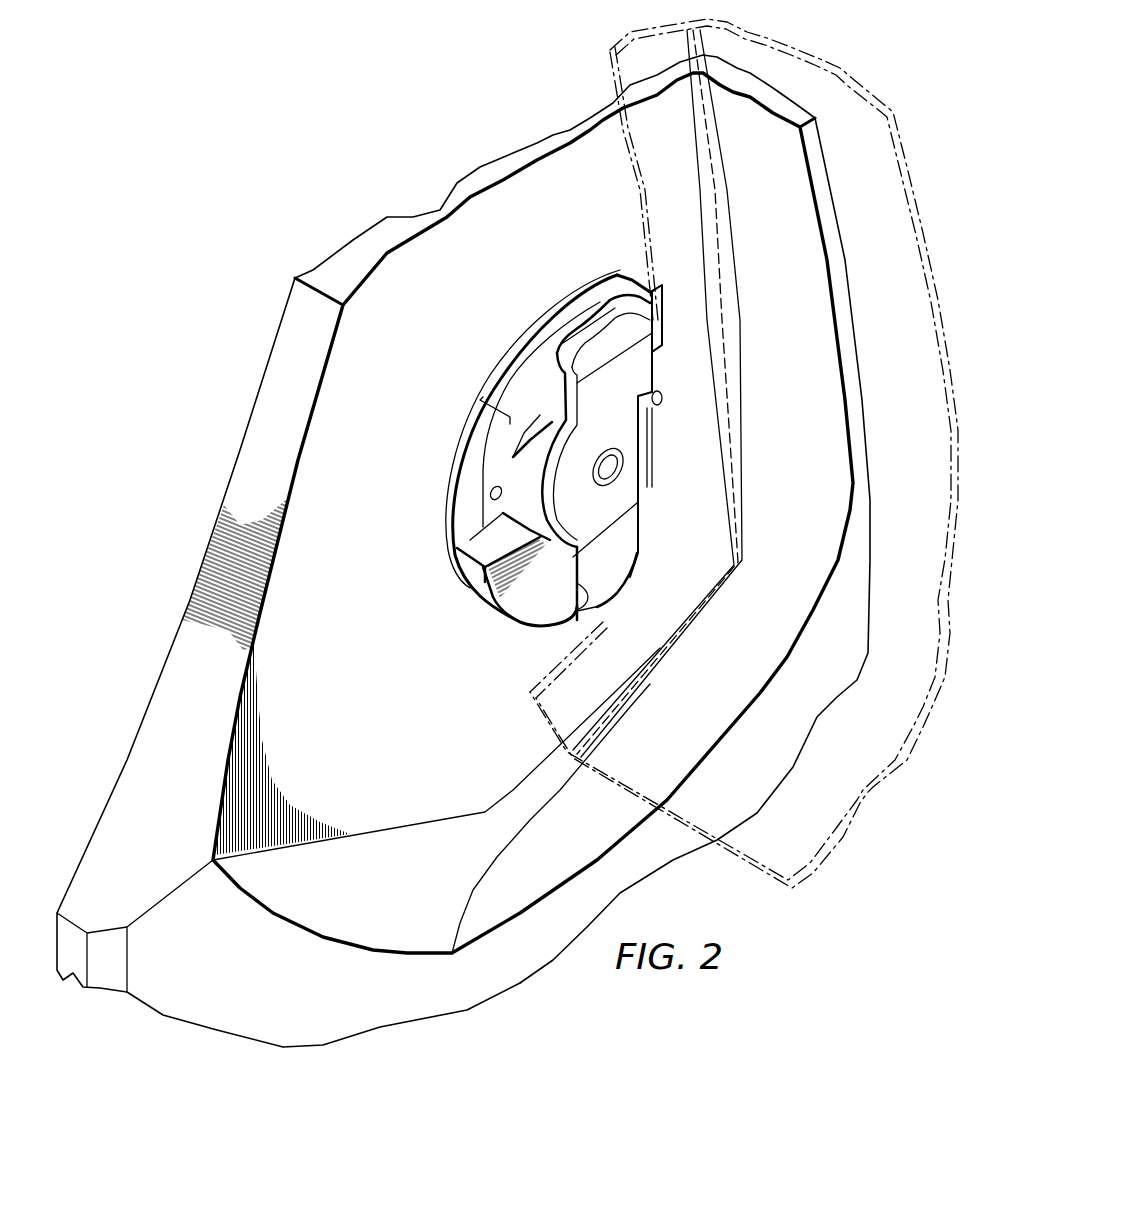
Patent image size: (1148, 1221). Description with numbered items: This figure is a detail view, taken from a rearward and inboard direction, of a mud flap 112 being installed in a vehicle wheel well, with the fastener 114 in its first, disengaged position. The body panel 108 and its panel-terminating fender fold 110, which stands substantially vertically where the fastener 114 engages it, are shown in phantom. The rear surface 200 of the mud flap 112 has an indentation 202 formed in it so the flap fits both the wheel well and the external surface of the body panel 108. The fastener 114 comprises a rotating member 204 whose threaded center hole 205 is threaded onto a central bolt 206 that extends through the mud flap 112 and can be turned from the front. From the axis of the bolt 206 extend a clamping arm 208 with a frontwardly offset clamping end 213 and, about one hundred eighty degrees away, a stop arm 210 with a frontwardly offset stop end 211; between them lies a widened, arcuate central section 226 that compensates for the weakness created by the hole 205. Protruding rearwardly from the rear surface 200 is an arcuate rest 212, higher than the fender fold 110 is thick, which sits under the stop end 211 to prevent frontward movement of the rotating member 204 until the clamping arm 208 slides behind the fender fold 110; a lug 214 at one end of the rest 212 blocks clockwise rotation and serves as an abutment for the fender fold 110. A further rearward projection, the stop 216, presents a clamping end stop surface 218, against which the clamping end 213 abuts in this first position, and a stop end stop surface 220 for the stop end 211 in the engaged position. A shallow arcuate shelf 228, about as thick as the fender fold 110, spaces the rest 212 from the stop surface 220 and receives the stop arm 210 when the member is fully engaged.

The body panel 108 is at (815, 70).
The fender fold 110 is at (640, 200).
The mud flap 112 is at (390, 1012).
The fastener 114 is at (538, 450).
The rear surface 200 is at (358, 688).
The indentation 202 is at (343, 904).
The rotating member 204 is at (662, 376).
The threaded center hole 205 is at (618, 452).
The bolt 206 is at (617, 468).
The clamping arm 208 is at (612, 573).
The stop arm 210 is at (632, 315).
The stop end 211 is at (598, 318).
The rest 212 is at (517, 350).
The clamping end 213 is at (600, 607).
The lug 214 is at (662, 333).
The stop 216 is at (523, 598).
The clamping end stop surface 218 is at (577, 607).
The stop end stop surface 220 is at (476, 553).
The central section 226 is at (615, 498).
The shallow arcuate shelf 228 is at (470, 443).